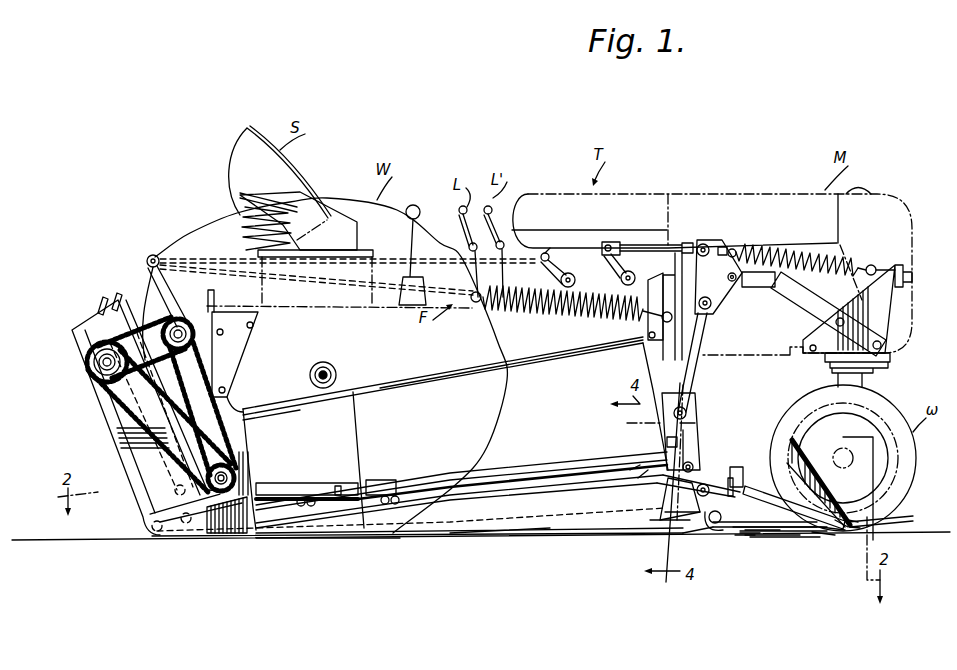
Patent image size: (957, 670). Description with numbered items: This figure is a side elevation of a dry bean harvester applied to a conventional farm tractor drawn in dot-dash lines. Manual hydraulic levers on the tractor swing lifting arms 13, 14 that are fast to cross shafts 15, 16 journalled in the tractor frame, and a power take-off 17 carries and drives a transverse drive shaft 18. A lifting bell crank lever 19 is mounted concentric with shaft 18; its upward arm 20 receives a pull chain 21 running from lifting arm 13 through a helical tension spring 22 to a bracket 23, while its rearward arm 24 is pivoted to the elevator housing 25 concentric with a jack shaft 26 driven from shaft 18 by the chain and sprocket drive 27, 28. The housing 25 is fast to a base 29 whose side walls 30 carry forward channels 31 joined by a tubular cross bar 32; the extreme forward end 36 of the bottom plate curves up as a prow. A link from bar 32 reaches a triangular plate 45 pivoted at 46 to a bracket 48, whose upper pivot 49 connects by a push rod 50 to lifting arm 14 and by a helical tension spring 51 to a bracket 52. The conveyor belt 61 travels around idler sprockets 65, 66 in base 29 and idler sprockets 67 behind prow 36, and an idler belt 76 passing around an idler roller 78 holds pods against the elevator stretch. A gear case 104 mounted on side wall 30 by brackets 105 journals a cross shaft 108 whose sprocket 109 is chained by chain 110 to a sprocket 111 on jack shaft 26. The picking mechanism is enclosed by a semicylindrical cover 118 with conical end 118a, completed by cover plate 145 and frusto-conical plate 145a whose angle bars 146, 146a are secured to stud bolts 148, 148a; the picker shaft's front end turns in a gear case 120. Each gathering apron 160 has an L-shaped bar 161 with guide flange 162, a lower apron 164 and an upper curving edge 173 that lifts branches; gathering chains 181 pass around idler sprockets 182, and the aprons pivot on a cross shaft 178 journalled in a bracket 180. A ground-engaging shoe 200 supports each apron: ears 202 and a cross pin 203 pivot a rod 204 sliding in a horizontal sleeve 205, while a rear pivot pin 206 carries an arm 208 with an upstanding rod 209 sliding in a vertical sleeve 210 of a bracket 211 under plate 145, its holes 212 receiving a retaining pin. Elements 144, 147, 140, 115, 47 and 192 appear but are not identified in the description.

The lifting bell crank lever 19 is at (151, 256).
The arm of bell crank lever 20 is at (167, 268).
The pull chain 21 is at (424, 258).
The endless idler belt 76 is at (118, 294).
The endless belt 61 is at (78, 322).
The second arm of bell crank lever 24 is at (118, 341).
The transverse jack shaft 26 is at (98, 362).
The sprocket 111 is at (105, 368).
The chain and sprocket drive 27 is at (208, 308).
The transverse drive shaft 18 is at (186, 334).
The power take-off 17 is at (208, 363).
The chain and sprocket drive 28 is at (186, 353).
The elevator housing 25 is at (120, 433).
The chain 110 is at (196, 440).
The sprocket 109 is at (217, 459).
The gear case 104 is at (216, 466).
The cross shaft 108 is at (232, 474).
The brackets 105 is at (245, 485).
The transverse idler roller 78 is at (175, 491).
The idler sprockets 65 is at (155, 531).
The base 29 is at (173, 541).
The idler sprockets 66 is at (188, 524).
The vertical side walls 30 is at (212, 530).
The channels 31 is at (280, 538).
The conical end of cover 118a is at (275, 416).
The roller 144 is at (310, 378).
The semicylindrical cover 118 is at (415, 385).
The rail 147 is at (487, 366).
The stud bolts 148a is at (303, 497).
The angle bar 146a is at (340, 490).
The stud bolts 148 is at (393, 495).
The angle bar 146 is at (428, 488).
The frusto-conical cover plate 145a is at (333, 522).
The arcuate cover plate 145 is at (560, 512).
The latch 140 is at (625, 467).
The front cross bar 32 is at (664, 438).
The bracket 180 is at (676, 489).
The idler sprockets 67 is at (655, 519).
The bar 115 is at (673, 516).
The bracket 211 is at (700, 498).
The extreme forward end of bottom plate 36 is at (718, 525).
The gear case 120 is at (688, 406).
The arm 47 is at (688, 381).
The bracket 192 is at (697, 438).
The cross shaft 178 is at (696, 458).
The transverse holes 212 is at (739, 470).
The vertical sleeve 210 is at (735, 486).
The bar 161 is at (788, 503).
The horizontal sleeve 205 is at (802, 514).
The upstanding rod 209 is at (733, 521).
The upstanding guide flange 162 is at (777, 527).
The lower apron 164 is at (772, 537).
The ground-engaging shoe 200 is at (750, 533).
The transverse pivot pin 206 is at (743, 531).
The arm 208 is at (738, 531).
The downwardly projecting ears 202 is at (828, 528).
The cross pin 203 is at (825, 531).
The rearwardly projecting rod 204 is at (820, 541).
The gathering chains 181 is at (858, 520).
The idler sprocket 182 is at (860, 526).
The gathering aprons 160 is at (811, 458).
The upper outwardly curving edge 173 is at (826, 475).
The bracket 23 is at (667, 340).
The helical tension spring 22 is at (568, 308).
The lifting arm 13 is at (553, 258).
The cross shaft 15 is at (572, 275).
The lifting arm 14 is at (595, 246).
The cross shaft 16 is at (633, 276).
The push rod 50 is at (645, 245).
The bracket 48 is at (680, 272).
The upper pivot 49 is at (706, 245).
The triangular plate 45 is at (720, 298).
The pivot 46 is at (739, 282).
The helical tension spring 51 is at (771, 250).
The bracket 52 is at (892, 304).